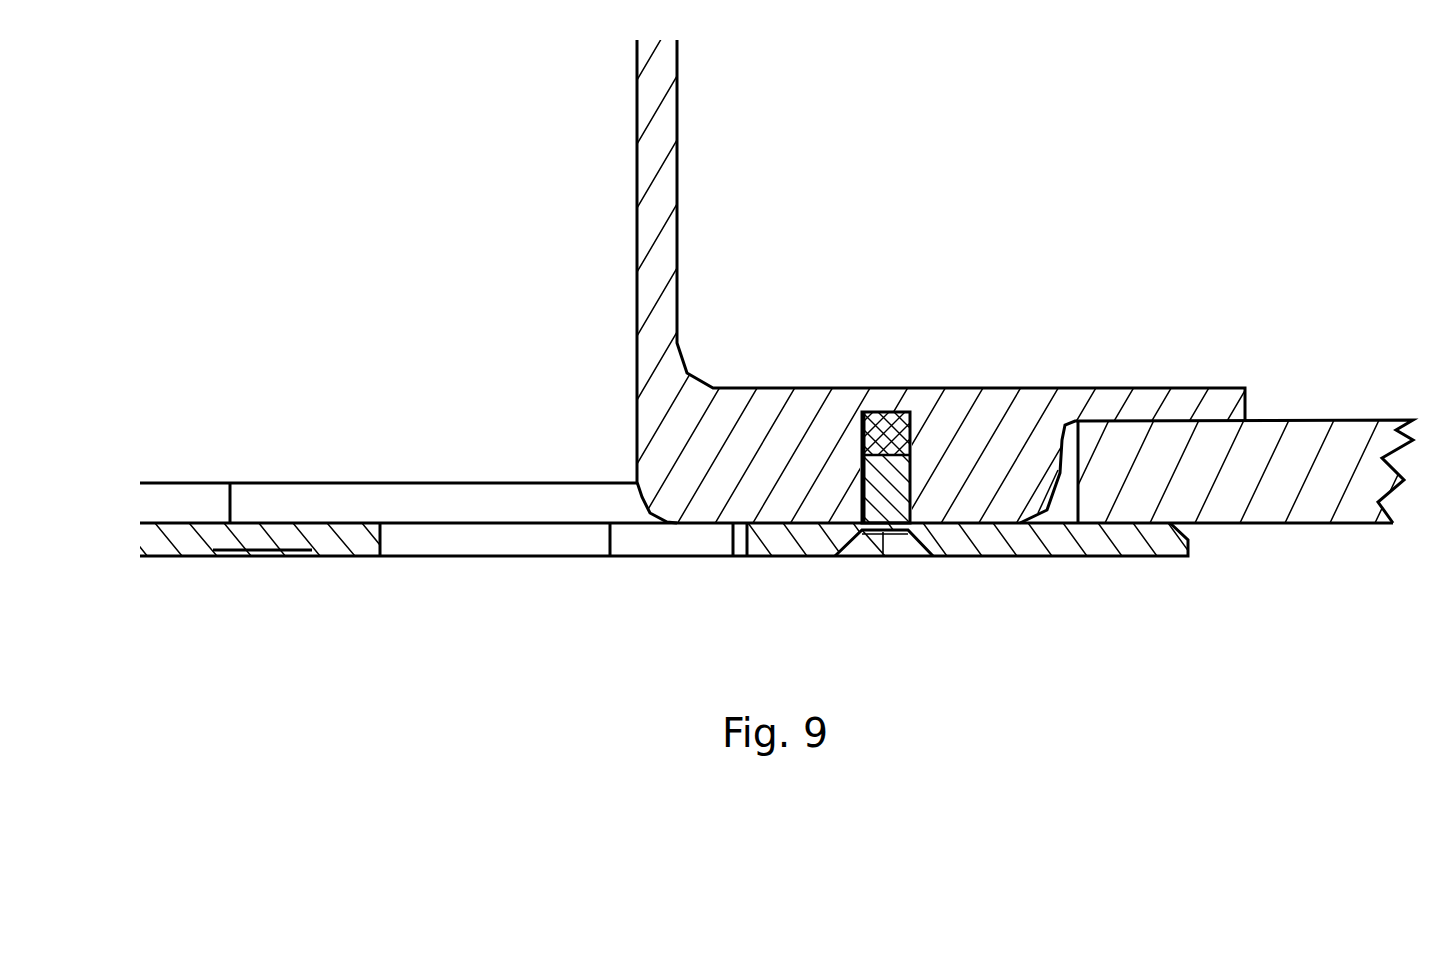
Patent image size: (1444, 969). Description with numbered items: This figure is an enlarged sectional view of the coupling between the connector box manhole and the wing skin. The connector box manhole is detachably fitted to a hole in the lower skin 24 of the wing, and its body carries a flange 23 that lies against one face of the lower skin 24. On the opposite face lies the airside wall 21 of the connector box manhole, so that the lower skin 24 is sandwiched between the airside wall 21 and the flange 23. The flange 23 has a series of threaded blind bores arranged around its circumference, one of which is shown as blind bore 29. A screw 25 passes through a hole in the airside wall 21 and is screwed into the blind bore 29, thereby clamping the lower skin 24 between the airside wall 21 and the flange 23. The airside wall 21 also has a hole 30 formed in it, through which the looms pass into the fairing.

The airside wall 21 is at (1038, 557).
The flange 23 is at (975, 387).
The lower skin 24 is at (1285, 523).
The screw 25 is at (877, 557).
The blind bore 29 is at (860, 433).
The hole 30 is at (382, 543).